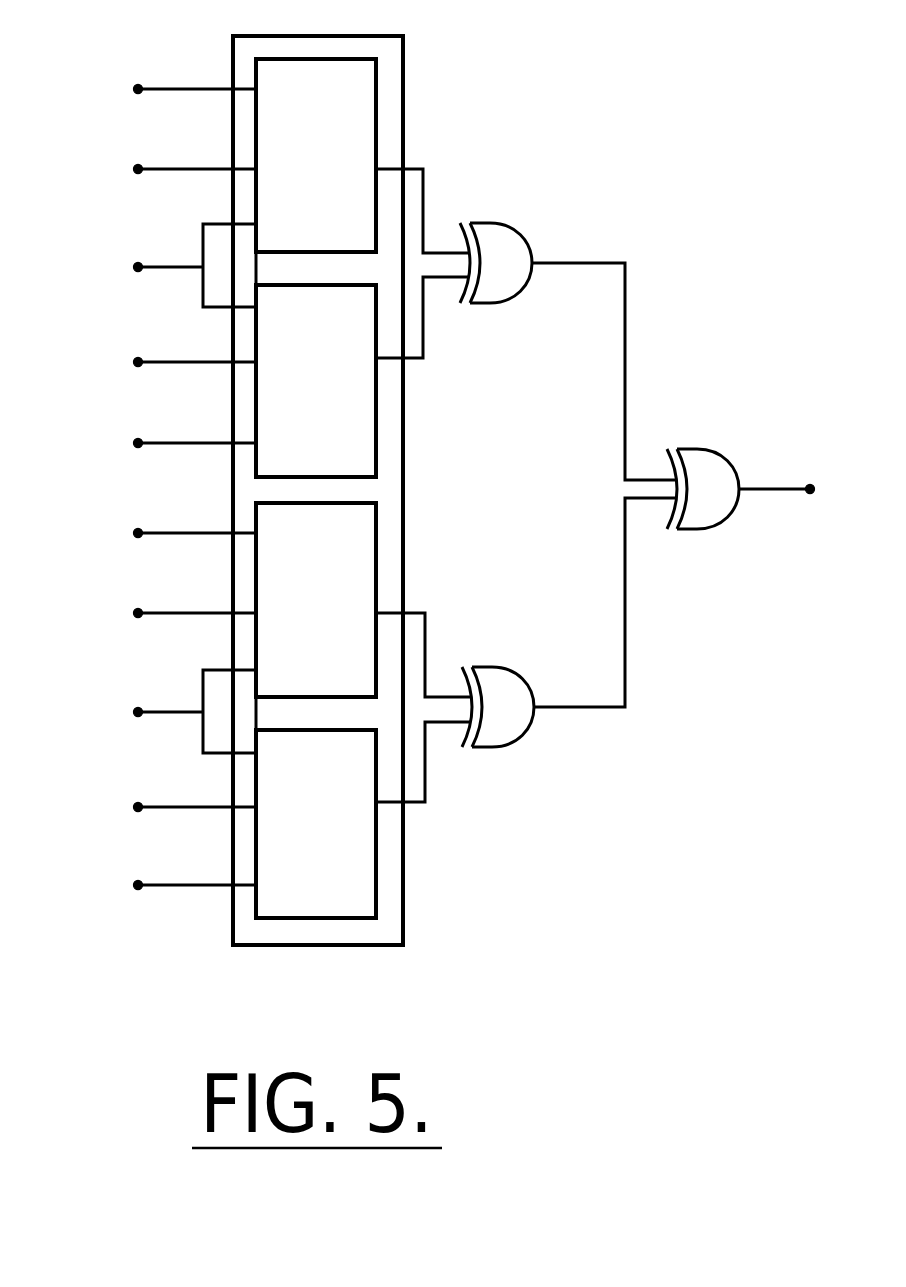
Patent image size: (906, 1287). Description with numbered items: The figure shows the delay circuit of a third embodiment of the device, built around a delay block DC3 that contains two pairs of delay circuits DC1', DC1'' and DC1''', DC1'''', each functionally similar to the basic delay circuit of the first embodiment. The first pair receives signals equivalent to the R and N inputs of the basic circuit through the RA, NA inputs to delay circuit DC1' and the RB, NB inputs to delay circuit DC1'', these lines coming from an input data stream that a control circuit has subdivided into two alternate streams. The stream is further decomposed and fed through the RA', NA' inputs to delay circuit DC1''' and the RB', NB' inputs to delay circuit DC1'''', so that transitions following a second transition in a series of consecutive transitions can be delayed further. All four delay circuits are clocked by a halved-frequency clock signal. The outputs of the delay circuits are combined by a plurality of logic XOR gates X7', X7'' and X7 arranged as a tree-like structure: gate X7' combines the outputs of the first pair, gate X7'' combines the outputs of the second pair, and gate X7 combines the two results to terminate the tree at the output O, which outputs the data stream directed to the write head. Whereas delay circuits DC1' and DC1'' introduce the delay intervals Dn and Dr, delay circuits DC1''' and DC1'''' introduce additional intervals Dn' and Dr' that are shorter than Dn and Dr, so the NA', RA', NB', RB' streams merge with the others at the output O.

The NA input NA is at (160, 60).
The RA input RA is at (160, 140).
The NB input NB is at (160, 333).
The RB input RB is at (160, 414).
The NA' input NA' is at (160, 504).
The RA' input RA' is at (160, 584).
The NB' input NB' is at (160, 778).
The RB' input RB' is at (160, 856).
The delay circuit DC1' is at (362, 156).
The delay circuit DC1'' is at (362, 377).
The delay circuit DC1''' is at (363, 600).
The delay circuit DC1'''' is at (363, 820).
The logic XOR gate X7' is at (567, 331).
The logic XOR gate X7'' is at (568, 622).
The logic XOR gate X7 is at (728, 471).
The output O is at (712, 525).
The delay block DC3 is at (370, 937).